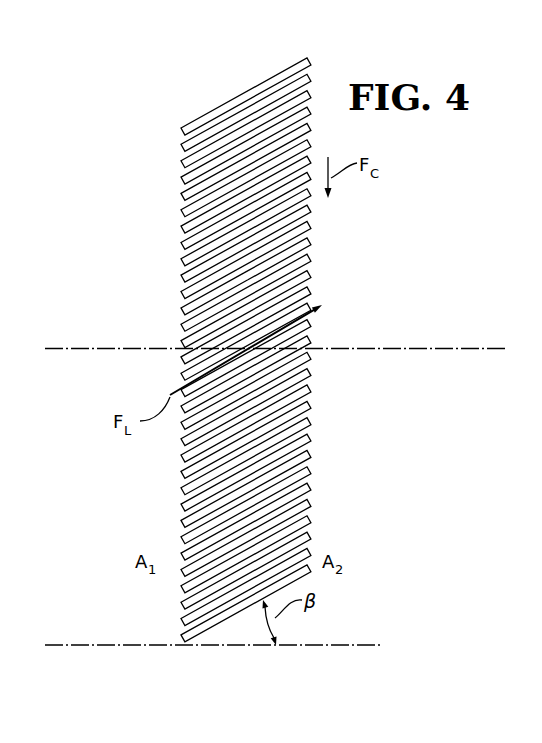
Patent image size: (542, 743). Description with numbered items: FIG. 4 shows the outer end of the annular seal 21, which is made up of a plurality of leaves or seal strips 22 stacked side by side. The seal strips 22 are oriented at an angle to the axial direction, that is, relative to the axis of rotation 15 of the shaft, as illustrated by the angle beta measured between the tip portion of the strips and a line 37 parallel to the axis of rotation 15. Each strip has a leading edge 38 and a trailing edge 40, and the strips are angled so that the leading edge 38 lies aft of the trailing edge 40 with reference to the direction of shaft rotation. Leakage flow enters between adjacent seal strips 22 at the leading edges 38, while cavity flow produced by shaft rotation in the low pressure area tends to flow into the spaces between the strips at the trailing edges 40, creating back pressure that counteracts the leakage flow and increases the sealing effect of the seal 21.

The axis of rotation 15 is at (449, 347).
The annular seal 21 is at (161, 212).
The seal strips 22 is at (258, 93).
The line parallel to the axis of rotation 37 is at (345, 647).
The leading edge 38 is at (182, 315).
The trailing edge 40 is at (311, 240).